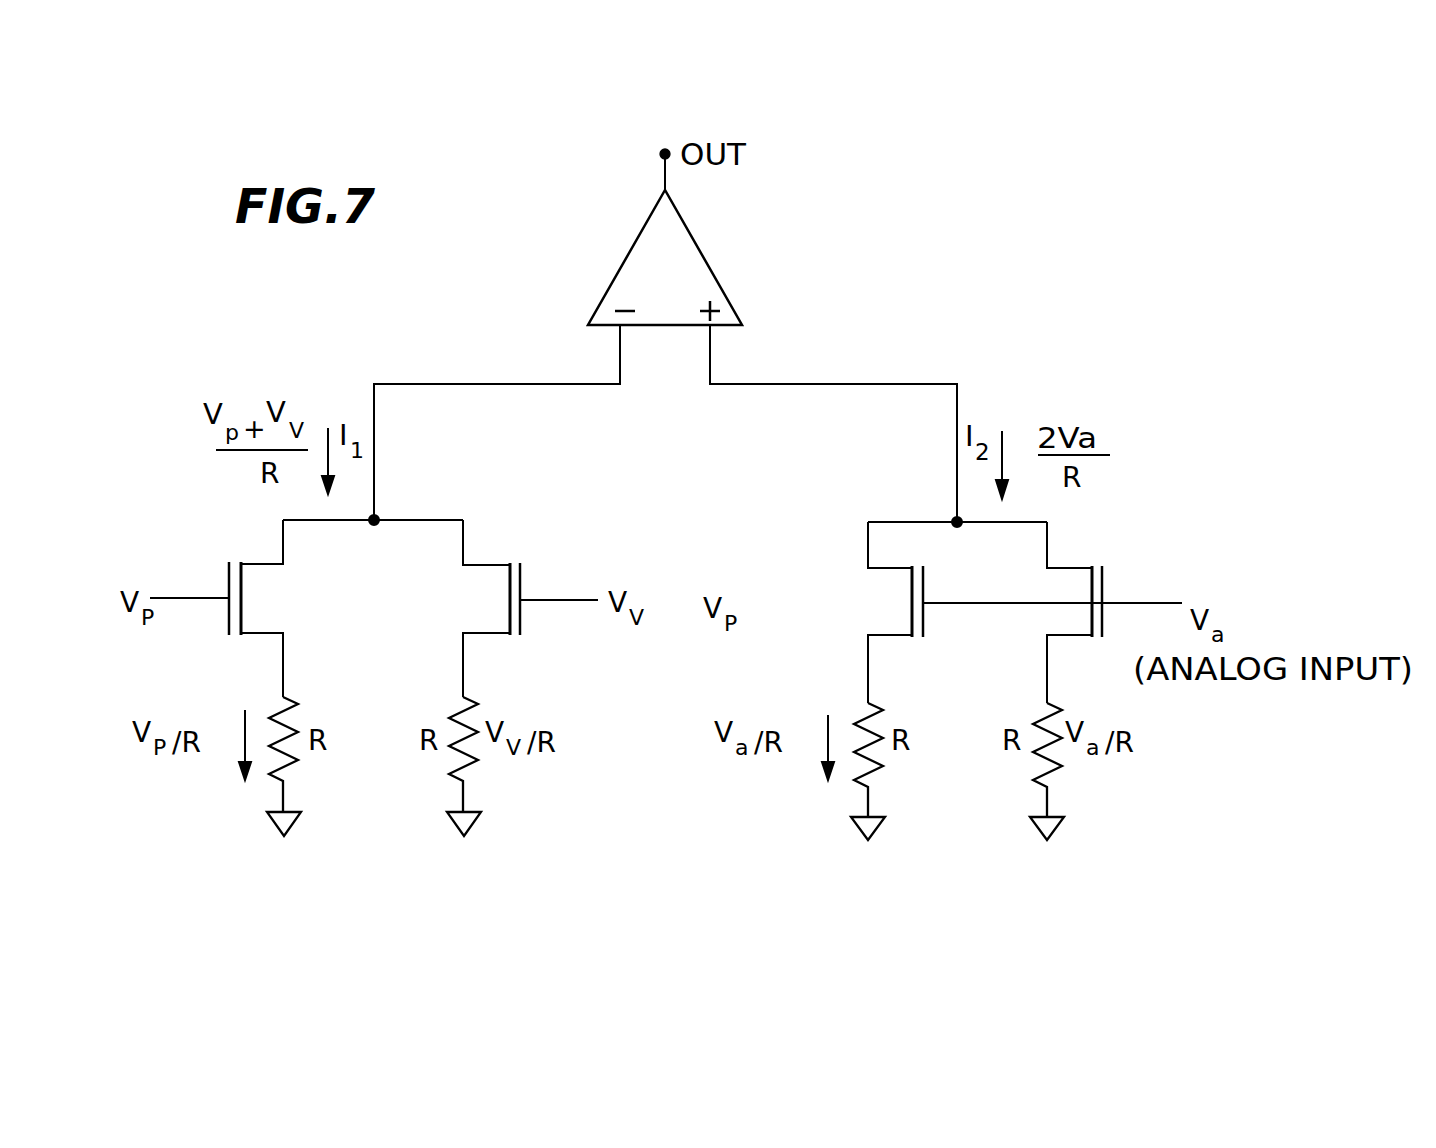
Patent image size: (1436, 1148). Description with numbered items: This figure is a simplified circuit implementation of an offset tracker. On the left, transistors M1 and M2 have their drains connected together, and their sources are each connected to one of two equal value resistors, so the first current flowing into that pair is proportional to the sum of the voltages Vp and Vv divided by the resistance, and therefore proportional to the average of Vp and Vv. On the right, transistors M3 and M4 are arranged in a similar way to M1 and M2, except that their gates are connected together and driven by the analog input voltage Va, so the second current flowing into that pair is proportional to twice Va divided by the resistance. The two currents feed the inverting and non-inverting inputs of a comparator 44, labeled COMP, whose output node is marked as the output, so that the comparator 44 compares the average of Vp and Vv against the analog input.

The comparator 44 is at (701, 250).
The transistor M1 is at (238, 608).
The transistor M2 is at (510, 608).
The transistor M3 is at (874, 612).
The transistor M4 is at (1048, 612).